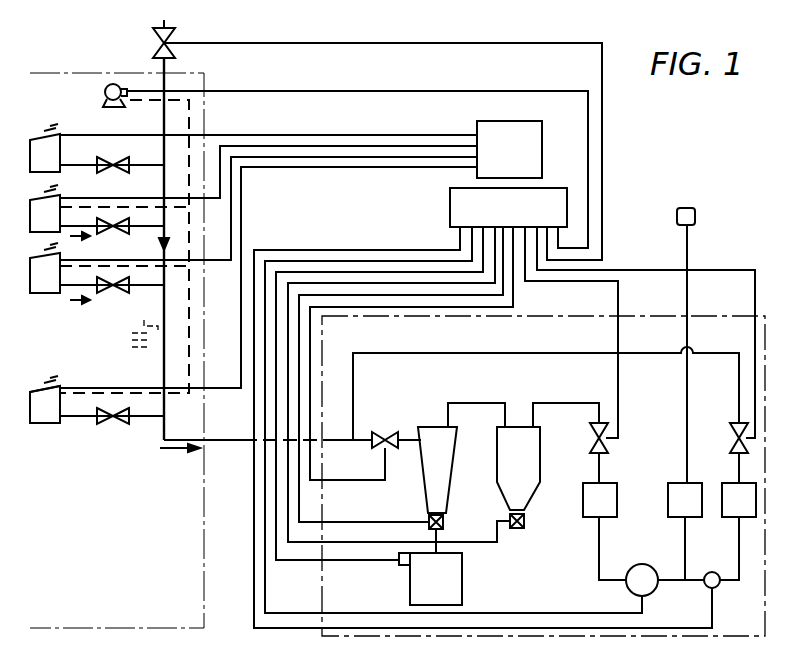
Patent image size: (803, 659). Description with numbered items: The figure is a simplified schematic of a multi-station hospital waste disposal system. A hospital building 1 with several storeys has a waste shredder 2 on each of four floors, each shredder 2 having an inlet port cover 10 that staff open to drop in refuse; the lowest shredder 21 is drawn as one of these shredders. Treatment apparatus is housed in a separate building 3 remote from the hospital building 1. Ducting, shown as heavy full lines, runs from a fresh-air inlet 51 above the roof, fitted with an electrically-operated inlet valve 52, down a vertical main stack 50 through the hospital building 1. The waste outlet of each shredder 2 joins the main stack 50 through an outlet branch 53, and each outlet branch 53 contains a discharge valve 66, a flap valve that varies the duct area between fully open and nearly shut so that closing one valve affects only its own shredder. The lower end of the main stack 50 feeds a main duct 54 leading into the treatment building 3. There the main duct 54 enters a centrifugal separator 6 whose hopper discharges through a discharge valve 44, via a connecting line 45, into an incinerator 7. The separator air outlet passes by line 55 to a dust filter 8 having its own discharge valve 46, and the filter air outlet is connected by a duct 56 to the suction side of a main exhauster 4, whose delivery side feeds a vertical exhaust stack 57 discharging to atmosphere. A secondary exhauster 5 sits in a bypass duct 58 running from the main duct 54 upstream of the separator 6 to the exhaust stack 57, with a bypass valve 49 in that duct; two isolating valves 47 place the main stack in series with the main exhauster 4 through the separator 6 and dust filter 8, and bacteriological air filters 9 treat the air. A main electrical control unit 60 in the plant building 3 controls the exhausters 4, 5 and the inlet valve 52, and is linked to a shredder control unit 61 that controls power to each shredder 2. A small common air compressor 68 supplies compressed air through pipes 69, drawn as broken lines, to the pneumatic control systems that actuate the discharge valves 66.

The hospital building 1 is at (204, 500).
The waste shredder 2 is at (62, 354).
The heat consumer 21 is at (52, 288).
The inlet port cover 10 is at (45, 386).
The separate building 3 is at (765, 328).
The main exhauster 4 is at (640, 570).
The secondary exhauster 5 is at (712, 571).
The centrifugal separator 6 is at (452, 440).
The incinerator 7 is at (430, 579).
The dust filter 8 is at (518, 468).
The bacteriological air filter 9 is at (669, 531).
The discharge valve 44 is at (445, 521).
The connecting line 45 is at (438, 547).
The discharge valve 46 is at (526, 524).
The isolating valve 47 is at (594, 428).
The bypass valve 49 is at (729, 433).
The main stack 50 is at (160, 430).
The air inlet 51 is at (168, 66).
The inlet valve 52 is at (155, 46).
The outlet branch 53 is at (77, 417).
The main duct 54 is at (187, 437).
The connecting line 55 is at (468, 403).
The duct 56 is at (571, 403).
The exhaust stack 57 is at (688, 245).
The bypass duct 58 is at (565, 350).
The main electrical control unit 60 is at (504, 408).
The shredder control unit 61 is at (509, 149).
The discharge valve 66 is at (109, 404).
The air compressor 68 is at (107, 84).
The pipes 69 is at (190, 300).